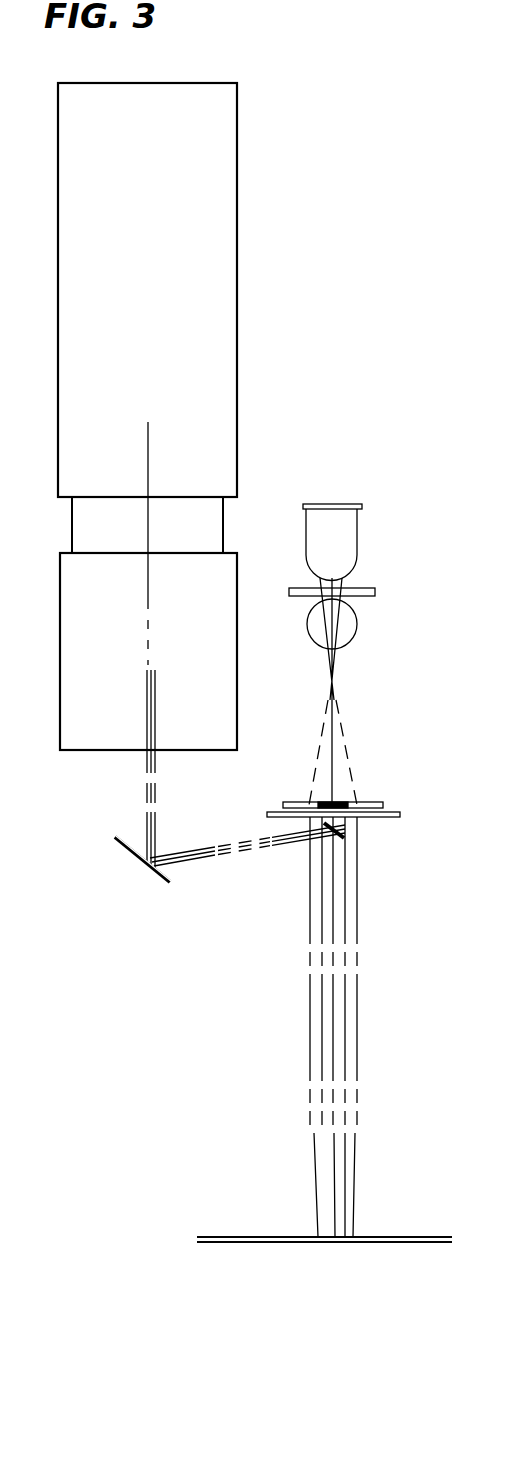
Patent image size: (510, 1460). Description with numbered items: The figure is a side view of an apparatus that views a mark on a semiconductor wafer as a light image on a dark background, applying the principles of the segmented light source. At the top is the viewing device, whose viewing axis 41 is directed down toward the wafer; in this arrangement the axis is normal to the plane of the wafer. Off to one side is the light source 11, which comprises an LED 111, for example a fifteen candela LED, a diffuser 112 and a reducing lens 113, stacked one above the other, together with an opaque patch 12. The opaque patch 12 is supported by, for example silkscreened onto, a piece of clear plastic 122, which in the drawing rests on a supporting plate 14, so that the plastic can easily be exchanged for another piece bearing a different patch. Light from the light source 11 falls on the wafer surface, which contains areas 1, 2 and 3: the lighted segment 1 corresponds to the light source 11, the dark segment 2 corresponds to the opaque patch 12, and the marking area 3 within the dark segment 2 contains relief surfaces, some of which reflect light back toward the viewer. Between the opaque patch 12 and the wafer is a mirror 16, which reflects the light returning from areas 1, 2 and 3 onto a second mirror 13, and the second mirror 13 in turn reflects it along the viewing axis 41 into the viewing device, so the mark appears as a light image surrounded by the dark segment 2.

The viewing axis 41 is at (148, 452).
The LED 111 is at (352, 530).
The diffuser 112 is at (375, 592).
The reducing lens 113 is at (347, 637).
The opaque patch 12 is at (338, 802).
The piece of clear plastic 122 is at (385, 804).
The stage 14 is at (400, 815).
The mirror 16 is at (352, 832).
The light source 11 is at (285, 819).
The second mirror 13 is at (130, 851).
The lighted segment 1 is at (324, 1243).
The dark segment 2 is at (324, 1239).
The marking area 3 is at (324, 1239).